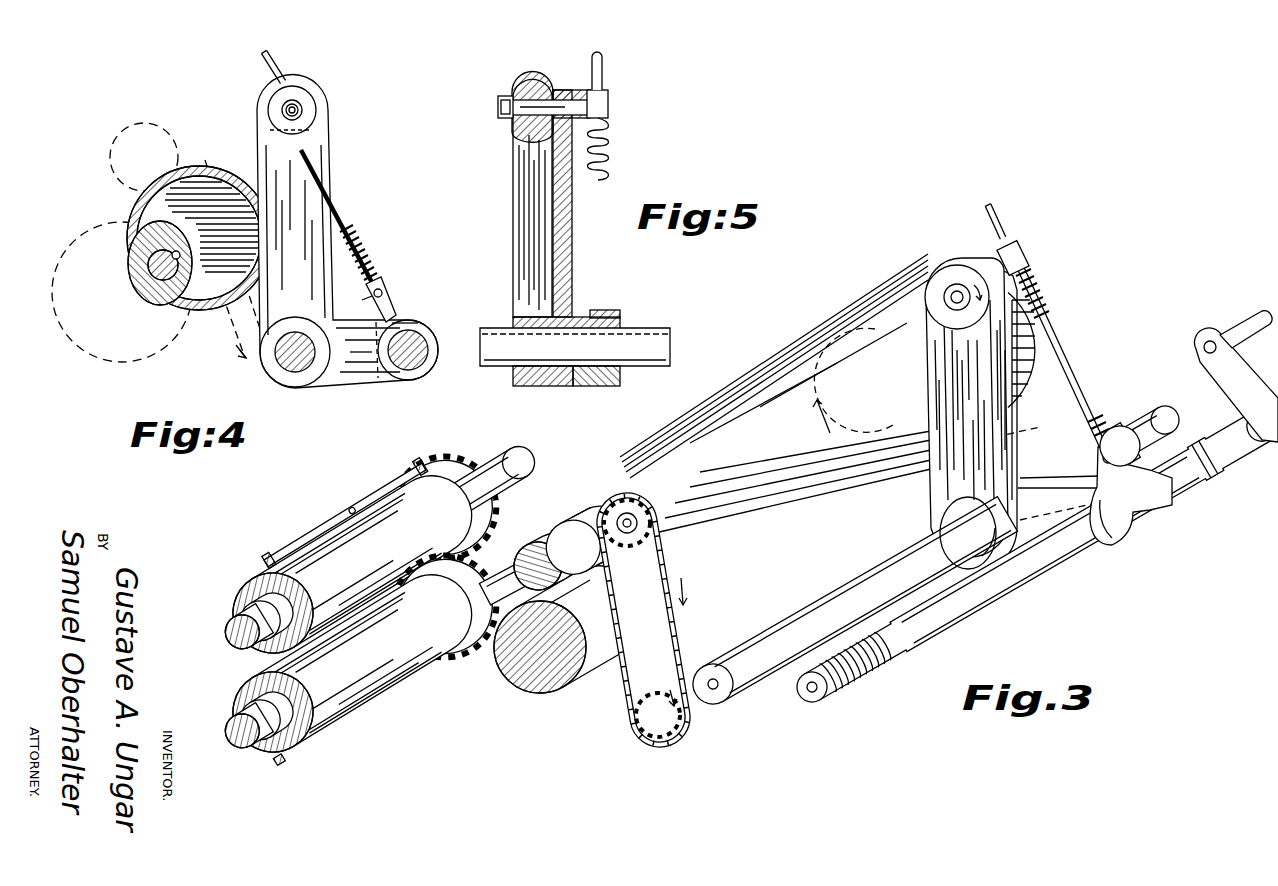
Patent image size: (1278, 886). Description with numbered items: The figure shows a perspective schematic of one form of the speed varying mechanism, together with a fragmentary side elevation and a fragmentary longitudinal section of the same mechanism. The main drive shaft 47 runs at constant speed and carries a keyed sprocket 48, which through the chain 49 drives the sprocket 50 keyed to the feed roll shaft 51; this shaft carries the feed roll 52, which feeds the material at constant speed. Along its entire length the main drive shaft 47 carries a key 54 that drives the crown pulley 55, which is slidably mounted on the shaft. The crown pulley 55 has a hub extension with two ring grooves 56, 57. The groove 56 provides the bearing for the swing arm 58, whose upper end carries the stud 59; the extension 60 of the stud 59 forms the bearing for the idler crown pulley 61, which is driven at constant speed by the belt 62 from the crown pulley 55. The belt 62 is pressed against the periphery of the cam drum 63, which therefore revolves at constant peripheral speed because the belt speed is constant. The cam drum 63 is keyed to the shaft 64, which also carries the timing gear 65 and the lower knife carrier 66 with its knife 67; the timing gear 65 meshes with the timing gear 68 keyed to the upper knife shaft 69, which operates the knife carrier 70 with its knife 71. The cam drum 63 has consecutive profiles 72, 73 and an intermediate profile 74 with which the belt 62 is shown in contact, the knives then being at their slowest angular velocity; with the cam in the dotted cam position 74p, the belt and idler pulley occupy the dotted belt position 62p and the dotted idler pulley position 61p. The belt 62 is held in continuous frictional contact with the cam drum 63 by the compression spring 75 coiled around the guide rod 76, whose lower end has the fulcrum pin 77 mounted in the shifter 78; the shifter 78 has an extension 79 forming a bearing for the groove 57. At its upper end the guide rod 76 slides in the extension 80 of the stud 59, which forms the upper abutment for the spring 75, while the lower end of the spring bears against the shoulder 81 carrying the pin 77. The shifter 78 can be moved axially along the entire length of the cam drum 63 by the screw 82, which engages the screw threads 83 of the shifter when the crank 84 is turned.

In FIG. 4, the main drive shaft 47 is at (288, 372).
In FIG. 5, the main drive shaft 47 is at (668, 343).
In FIG. 3, the main drive shaft 47 is at (1170, 418).
In FIG. 3, the sprocket 48 is at (640, 726).
In FIG. 3, the chain 49 is at (686, 652).
In FIG. 3, the sprocket 50 is at (640, 545).
In FIG. 3, the feed roll shaft 51 is at (629, 516).
In FIG. 3, the feed roll 52 is at (582, 516).
In FIG. 4, the key 54 is at (244, 360).
In FIG. 5, the key 54 is at (645, 332).
In FIG. 3, the key 54 is at (865, 573).
In FIG. 5, the crown pulley 55 is at (518, 320).
In FIG. 3, the crown pulley 55 is at (941, 528).
In FIG. 5, the ring groove 56 is at (551, 380).
In FIG. 4, the ring groove 57 is at (366, 296).
In FIG. 5, the ring groove 57 is at (598, 380).
In FIG. 3, the ring groove 57 is at (1130, 418).
In FIG. 4, the swing arm 58 is at (330, 215).
In FIG. 5, the swing arm 58 is at (573, 228).
In FIG. 3, the swing arm 58 is at (1066, 440).
In FIG. 5, the stud 59 is at (555, 96).
In FIG. 5, the extension of stud 60 is at (506, 118).
In FIG. 4, the idler crown pulley 61 is at (306, 98).
In FIG. 5, the idler crown pulley 61 is at (536, 132).
In FIG. 3, the idler crown pulley 61 is at (942, 306).
In FIG. 4, the idler crown pulley dotted position 61p is at (128, 155).
In FIG. 4, the belt 62 is at (325, 140).
In FIG. 5, the belt 62 is at (515, 222).
In FIG. 3, the belt 62 is at (944, 462).
In FIG. 4, the belt dotted position 62p is at (240, 300).
In FIG. 3, the cam drum 63 is at (528, 684).
In FIG. 4, the shaft 64 is at (155, 285).
In FIG. 3, the shaft 64 is at (490, 570).
In FIG. 3, the timing gear 65 is at (465, 668).
In FIG. 3, the lower knife carrier 66 is at (234, 693).
In FIG. 3, the knife 67 is at (266, 765).
In FIG. 3, the timing gear 68 is at (450, 472).
In FIG. 3, the upper knife shaft 69 is at (532, 462).
In FIG. 3, the knife carrier 70 is at (236, 592).
In FIG. 3, the knife 71 is at (300, 538).
In FIG. 3, the profile 72 is at (870, 330).
In FIG. 3, the profile 73 is at (524, 542).
In FIG. 4, the profile 74 is at (205, 200).
In FIG. 4, the cam dotted position 74p is at (78, 345).
In FIG. 4, the compression spring 75 is at (368, 252).
In FIG. 5, the compression spring 75 is at (608, 145).
In FIG. 3, the compression spring 75 is at (1044, 292).
In FIG. 4, the guide rod 76 is at (272, 58).
In FIG. 5, the guide rod 76 is at (603, 62).
In FIG. 3, the guide rod 76 is at (1002, 220).
In FIG. 4, the fulcrum pin 77 is at (395, 290).
In FIG. 3, the fulcrum pin 77 is at (1100, 457).
In FIG. 4, the shifter 78 is at (397, 313).
In FIG. 3, the shifter 78 is at (1156, 522).
In FIG. 4, the extension of shifter 79 is at (356, 380).
In FIG. 5, the extension of shifter 79 is at (594, 310).
In FIG. 3, the extension of shifter 79 is at (1034, 477).
In FIG. 5, the extension of stud 80 is at (609, 98).
In FIG. 3, the extension of stud 80 is at (1028, 250).
In FIG. 4, the shoulder 81 is at (382, 289).
In FIG. 4, the screw 82 is at (408, 370).
In FIG. 3, the screw 82 is at (968, 607).
In FIG. 4, the screw threads 83 is at (425, 335).
In FIG. 3, the crank 84 is at (1245, 372).